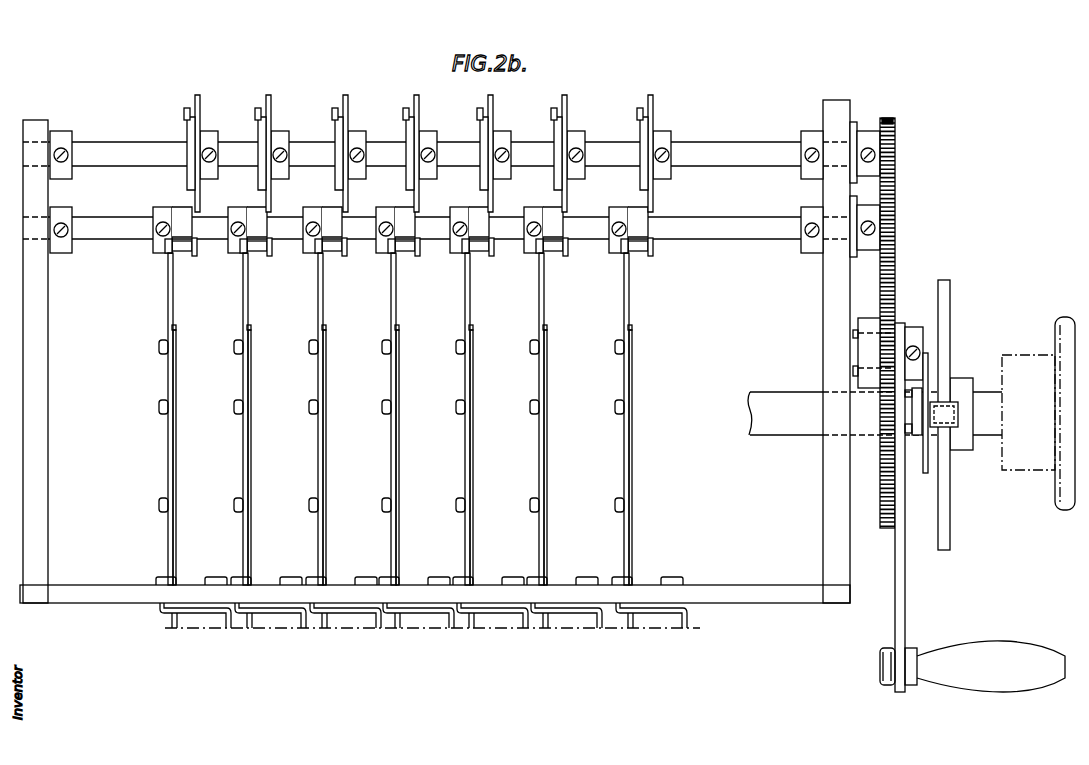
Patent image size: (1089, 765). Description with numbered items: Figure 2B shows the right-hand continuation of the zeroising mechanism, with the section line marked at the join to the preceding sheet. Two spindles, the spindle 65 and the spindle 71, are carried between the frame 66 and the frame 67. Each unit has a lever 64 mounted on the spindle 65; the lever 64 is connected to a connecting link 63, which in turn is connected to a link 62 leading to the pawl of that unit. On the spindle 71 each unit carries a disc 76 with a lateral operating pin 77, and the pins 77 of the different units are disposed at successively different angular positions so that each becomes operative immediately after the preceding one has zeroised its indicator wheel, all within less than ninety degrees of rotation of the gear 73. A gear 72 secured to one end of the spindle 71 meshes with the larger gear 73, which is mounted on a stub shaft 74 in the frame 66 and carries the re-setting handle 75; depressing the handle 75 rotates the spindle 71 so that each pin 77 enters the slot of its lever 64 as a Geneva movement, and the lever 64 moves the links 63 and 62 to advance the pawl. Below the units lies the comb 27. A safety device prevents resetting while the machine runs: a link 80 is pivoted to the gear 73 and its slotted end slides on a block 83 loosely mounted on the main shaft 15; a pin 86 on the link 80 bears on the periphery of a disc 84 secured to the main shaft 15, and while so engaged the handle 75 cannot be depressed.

The main shaft 15 is at (786, 423).
The guide comb 27 is at (688, 611).
The link 62 is at (170, 618).
The connecting link 63 is at (172, 293).
The lever 64 is at (344, 197).
The spindle 65 is at (685, 227).
The frame 66 is at (828, 279).
The frame 67 is at (35, 329).
The spindle 71 is at (693, 146).
The gear 72 is at (895, 136).
The gear 73 is at (893, 223).
The stub shaft 74 is at (858, 348).
The handle 75 is at (907, 618).
The disc 76 is at (201, 107).
The operating pin 77 is at (186, 113).
The link 80 is at (912, 418).
The block 83 is at (920, 443).
The disc 84 is at (950, 509).
The pin 86 is at (946, 401).